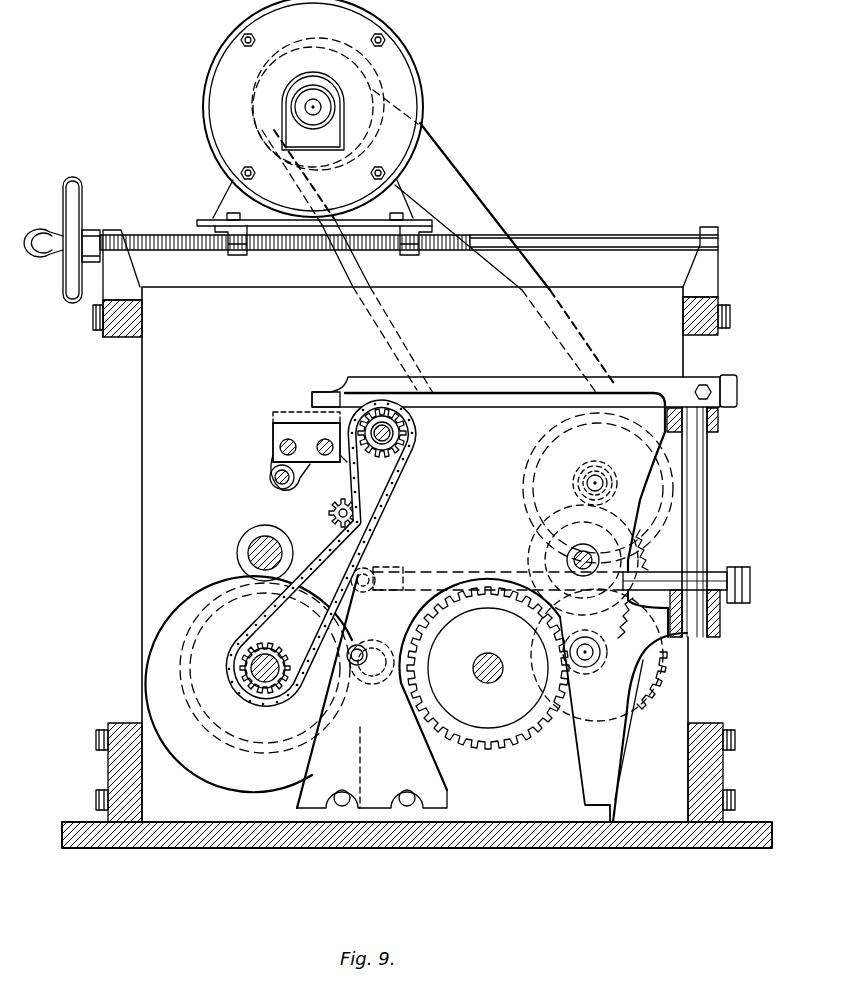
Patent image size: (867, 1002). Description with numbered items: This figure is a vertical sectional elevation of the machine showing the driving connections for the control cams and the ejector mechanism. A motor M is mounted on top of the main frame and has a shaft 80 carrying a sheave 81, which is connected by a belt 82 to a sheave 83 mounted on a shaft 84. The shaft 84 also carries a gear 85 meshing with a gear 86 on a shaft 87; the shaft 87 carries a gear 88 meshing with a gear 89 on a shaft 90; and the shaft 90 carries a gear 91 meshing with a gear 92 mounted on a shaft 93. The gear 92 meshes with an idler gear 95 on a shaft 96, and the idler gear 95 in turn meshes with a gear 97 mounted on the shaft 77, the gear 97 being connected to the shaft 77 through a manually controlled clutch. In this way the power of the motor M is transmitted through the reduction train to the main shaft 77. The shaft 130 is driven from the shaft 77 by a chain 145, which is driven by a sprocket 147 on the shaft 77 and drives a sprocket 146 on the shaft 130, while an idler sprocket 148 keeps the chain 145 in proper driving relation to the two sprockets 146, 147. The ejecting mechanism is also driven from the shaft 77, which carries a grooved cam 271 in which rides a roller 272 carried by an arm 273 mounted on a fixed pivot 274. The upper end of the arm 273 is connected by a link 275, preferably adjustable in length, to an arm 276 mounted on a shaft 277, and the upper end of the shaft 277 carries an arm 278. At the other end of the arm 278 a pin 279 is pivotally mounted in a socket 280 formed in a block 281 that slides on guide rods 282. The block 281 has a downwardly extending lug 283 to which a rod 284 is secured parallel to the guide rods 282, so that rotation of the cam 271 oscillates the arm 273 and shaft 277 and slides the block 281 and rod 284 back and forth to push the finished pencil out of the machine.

The motor M is at (420, 80).
The shaft 80 is at (313, 100).
The sheave 81 is at (412, 128).
The belt 82 is at (487, 213).
The sheave 83 is at (535, 440).
The shaft 84 is at (597, 469).
The gear 85 is at (588, 476).
The gear 86 is at (640, 560).
The shaft 87 is at (585, 552).
The gear 88 is at (530, 556).
The gear 89 is at (665, 668).
The shaft 90 is at (625, 622).
The gear 91 is at (592, 664).
The gear 92 is at (535, 725).
The shaft 93 is at (500, 665).
The idler gear 95 is at (410, 662).
The shaft 96 is at (376, 643).
The gear 97 is at (215, 615).
The shaft 77 is at (275, 657).
The shaft 130 is at (382, 425).
The chain 145 is at (372, 548).
The sprocket 146 is at (398, 440).
The sprocket 147 is at (285, 680).
The idler sprocket 148 is at (329, 514).
The grooved cam 271 is at (223, 757).
The roller 272 is at (360, 720).
The arm 273 is at (368, 762).
The fixed pivot 274 is at (335, 797).
The link 275 is at (440, 572).
The arm 276 is at (750, 600).
The shaft 277 is at (700, 540).
The arm 278 is at (615, 382).
The pin 279 is at (320, 420).
The socket 280 is at (270, 417).
The block 281 is at (273, 437).
The guide rods 282 is at (280, 449).
The lug 283 is at (272, 483).
The rod 284 is at (347, 462).